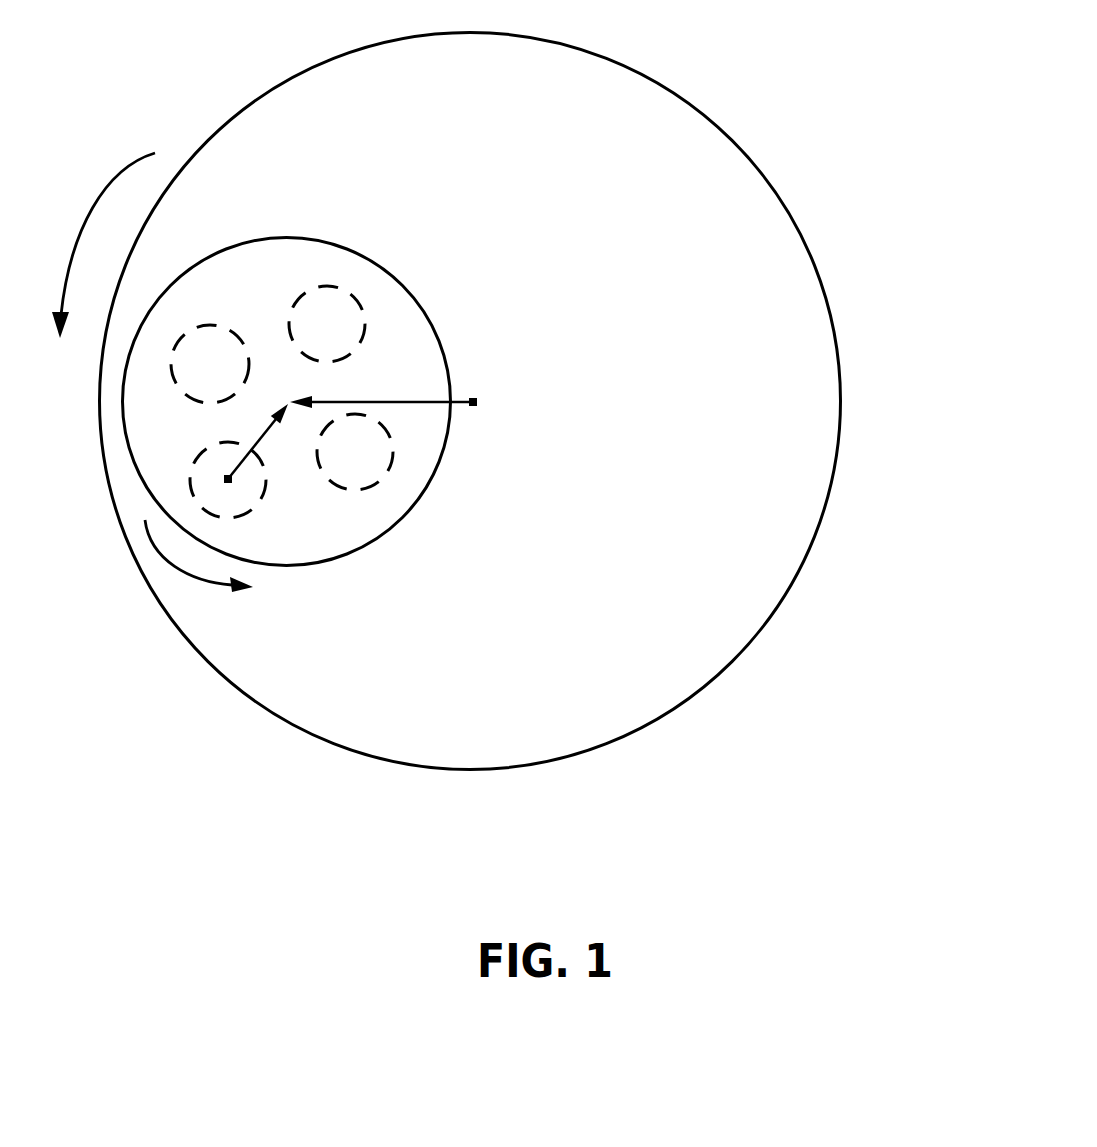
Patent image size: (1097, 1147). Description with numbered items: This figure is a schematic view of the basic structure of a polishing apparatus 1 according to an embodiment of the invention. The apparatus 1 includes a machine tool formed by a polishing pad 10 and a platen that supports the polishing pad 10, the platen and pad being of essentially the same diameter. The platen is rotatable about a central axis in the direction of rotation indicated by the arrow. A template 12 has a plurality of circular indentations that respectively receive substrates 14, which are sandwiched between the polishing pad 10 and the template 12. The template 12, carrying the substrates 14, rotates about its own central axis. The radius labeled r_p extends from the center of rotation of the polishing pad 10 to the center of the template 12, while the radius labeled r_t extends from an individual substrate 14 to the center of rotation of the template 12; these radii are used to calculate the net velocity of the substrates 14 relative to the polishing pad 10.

The apparatus 1 is at (505, 388).
The polishing pad 10 is at (792, 478).
The template 12 is at (266, 278).
The substrates 14 is at (325, 323).